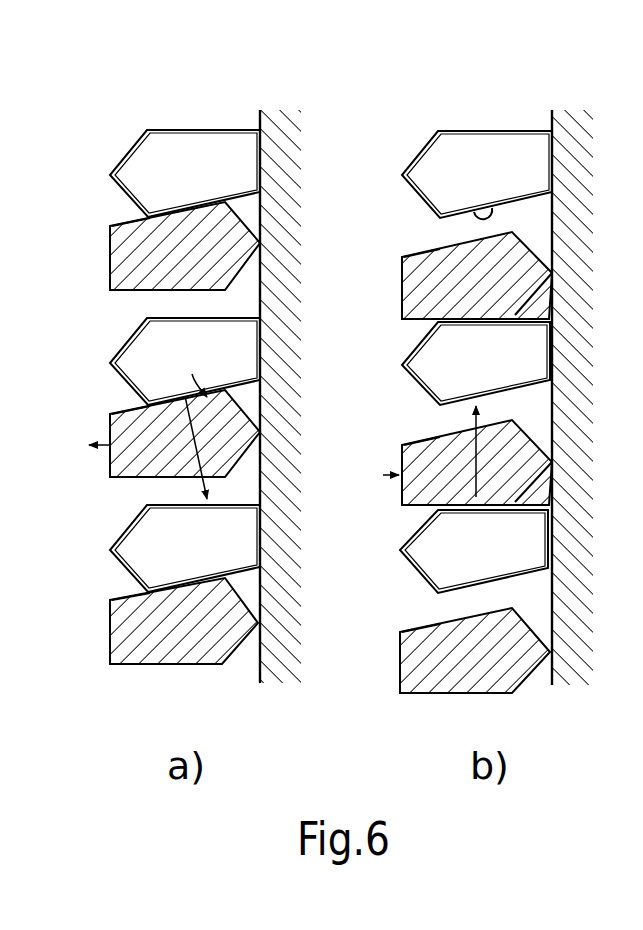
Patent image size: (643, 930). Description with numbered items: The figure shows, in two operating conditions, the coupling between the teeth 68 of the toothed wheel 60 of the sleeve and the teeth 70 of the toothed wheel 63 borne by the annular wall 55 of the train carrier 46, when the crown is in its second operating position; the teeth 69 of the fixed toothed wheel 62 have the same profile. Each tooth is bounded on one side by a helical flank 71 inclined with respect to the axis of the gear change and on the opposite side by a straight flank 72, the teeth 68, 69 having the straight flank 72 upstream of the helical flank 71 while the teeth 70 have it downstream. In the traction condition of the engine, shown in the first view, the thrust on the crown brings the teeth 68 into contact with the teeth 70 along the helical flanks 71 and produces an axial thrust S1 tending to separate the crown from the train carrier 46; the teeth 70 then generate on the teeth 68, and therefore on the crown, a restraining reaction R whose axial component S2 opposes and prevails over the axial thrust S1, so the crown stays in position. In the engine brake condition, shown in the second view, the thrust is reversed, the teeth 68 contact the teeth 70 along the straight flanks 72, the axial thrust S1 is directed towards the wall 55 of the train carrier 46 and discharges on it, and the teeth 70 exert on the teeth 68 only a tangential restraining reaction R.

In FIG. 6a, the train carrier 46 is at (280, 190).
In FIG. 6b, the train carrier 46 is at (571, 216).
In FIG. 6a, the annular wall 55 is at (281, 138).
In FIG. 6b, the annular wall 55 is at (577, 137).
In FIG. 6a, the toothed wheel 60 is at (143, 248).
In FIG. 6b, the fixed toothed wheel 62 is at (523, 265).
In FIG. 6a, the toothed wheel 63 is at (155, 155).
In FIG. 6b, the toothed wheel 63 is at (450, 158).
In FIG. 6a, the teeth 68 is at (127, 260).
In FIG. 6b, the teeth 69 is at (517, 290).
In FIG. 6a, the teeth 70 is at (137, 167).
In FIG. 6b, the teeth 70 is at (538, 167).
In FIG. 6a, the helical flank 71 is at (170, 212).
In FIG. 6b, the helical flank 71 is at (492, 212).
In FIG. 6a, the straight flank 72 is at (198, 126).
In FIG. 6b, the straight flank 72 is at (492, 127).
In FIG. 6a, the axial thrust S1 is at (98, 445).
In FIG. 6b, the axial thrust S1 is at (383, 475).
In FIG. 6a, the axial component of restraining reaction S2 is at (196, 371).
In FIG. 6a, the restraining reaction R is at (196, 450).
In FIG. 6b, the restraining reaction R is at (478, 455).